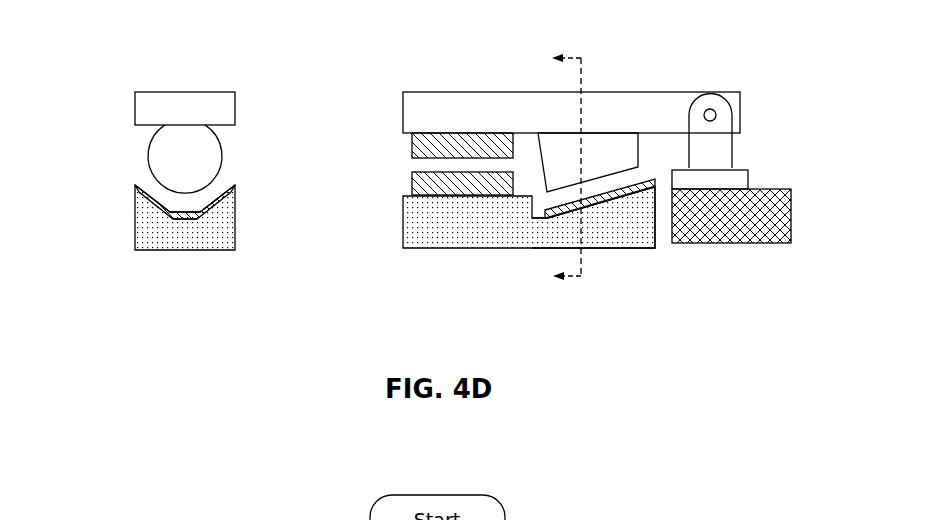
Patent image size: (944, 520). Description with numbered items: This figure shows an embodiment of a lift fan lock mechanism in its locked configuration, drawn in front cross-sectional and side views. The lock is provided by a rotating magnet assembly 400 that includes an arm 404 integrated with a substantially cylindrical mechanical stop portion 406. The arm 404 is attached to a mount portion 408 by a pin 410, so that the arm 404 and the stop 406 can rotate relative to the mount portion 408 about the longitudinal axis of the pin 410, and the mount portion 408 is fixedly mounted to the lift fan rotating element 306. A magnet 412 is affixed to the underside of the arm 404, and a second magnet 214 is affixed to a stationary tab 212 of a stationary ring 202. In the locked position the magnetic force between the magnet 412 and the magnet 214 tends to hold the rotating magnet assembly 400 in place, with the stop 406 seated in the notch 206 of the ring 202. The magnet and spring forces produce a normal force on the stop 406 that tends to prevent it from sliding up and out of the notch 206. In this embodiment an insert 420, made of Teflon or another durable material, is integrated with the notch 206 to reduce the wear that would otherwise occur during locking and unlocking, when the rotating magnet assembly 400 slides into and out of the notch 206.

The rotating magnet assembly 400 is at (381, 60).
The arm 404 is at (135, 105).
The mechanical stop portion 406 is at (148, 152).
The insert 420 is at (135, 186).
The stationary ring 202 is at (160, 252).
The notch 206 is at (190, 222).
The magnet 412 is at (412, 145).
The magnet 214 is at (412, 183).
The stationary tab 212 is at (440, 248).
The pin 410 is at (712, 109).
The mount portion 408 is at (733, 153).
The lift fan rotating element 306 is at (768, 244).